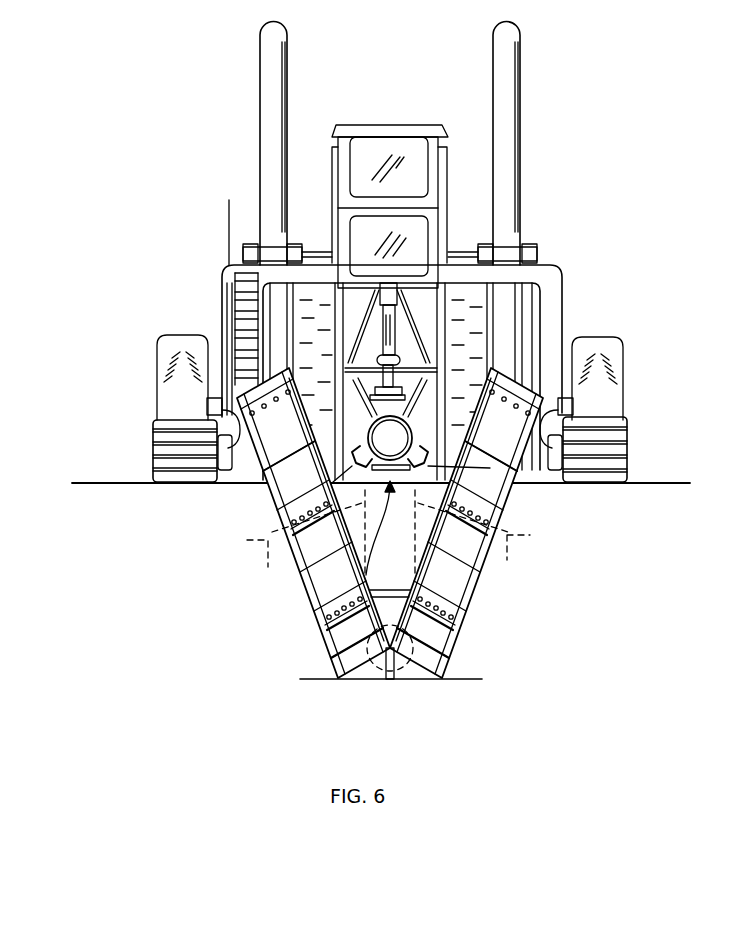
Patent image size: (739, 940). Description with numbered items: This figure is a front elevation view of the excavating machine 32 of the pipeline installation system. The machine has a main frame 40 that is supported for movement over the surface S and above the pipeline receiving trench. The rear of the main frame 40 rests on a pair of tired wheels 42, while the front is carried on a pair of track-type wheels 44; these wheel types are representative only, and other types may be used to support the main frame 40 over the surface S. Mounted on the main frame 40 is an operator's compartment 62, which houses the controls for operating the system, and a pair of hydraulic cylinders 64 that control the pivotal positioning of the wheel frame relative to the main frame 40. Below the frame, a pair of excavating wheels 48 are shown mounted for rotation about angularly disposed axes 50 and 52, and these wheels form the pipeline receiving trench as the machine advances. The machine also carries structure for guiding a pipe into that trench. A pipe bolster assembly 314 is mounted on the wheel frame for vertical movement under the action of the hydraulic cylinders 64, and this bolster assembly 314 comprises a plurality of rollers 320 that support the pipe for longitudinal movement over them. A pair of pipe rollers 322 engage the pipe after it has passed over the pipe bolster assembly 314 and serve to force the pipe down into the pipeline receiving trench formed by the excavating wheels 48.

The excavating machine 32 is at (556, 77).
The main frame 40 is at (564, 288).
The tired wheels 42 is at (185, 335).
The track-type wheels 44 is at (153, 442).
The excavating wheels 48 is at (305, 583).
The axis 50 is at (270, 560).
The axis 52 is at (506, 560).
The operator's compartment 62 is at (455, 158).
The hydraulic cylinders 64 is at (260, 160).
The pipe bolster assembly 314 is at (330, 637).
The rollers 320 is at (322, 490).
The pipe rollers 322 is at (371, 421).
The surface S is at (92, 483).